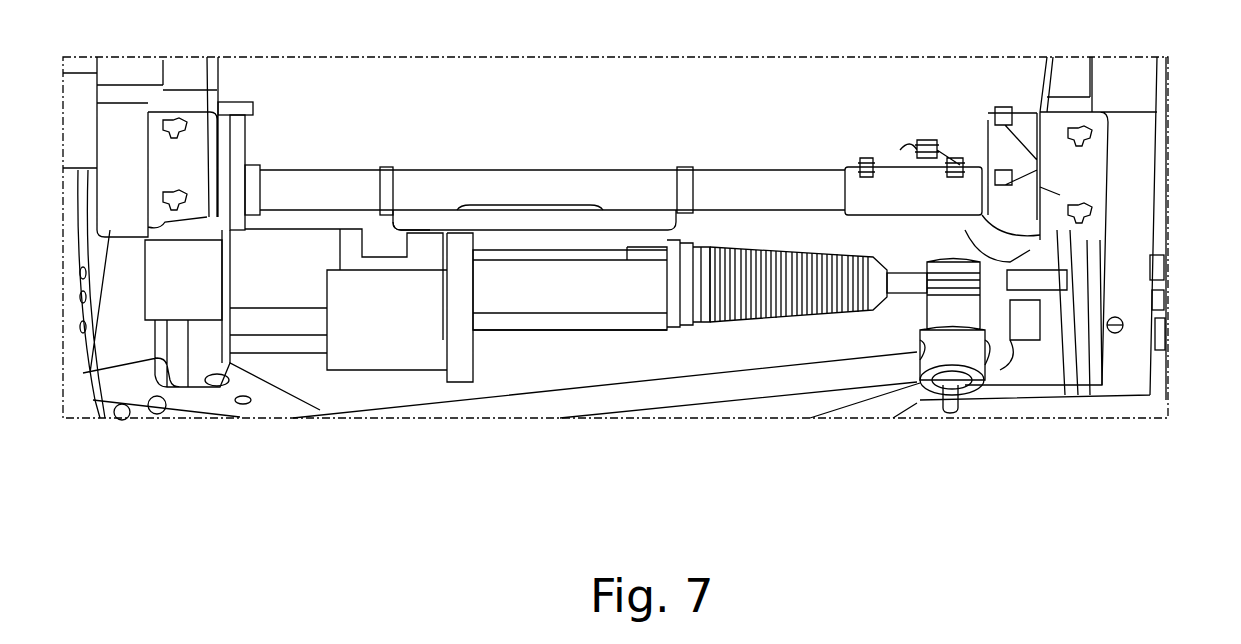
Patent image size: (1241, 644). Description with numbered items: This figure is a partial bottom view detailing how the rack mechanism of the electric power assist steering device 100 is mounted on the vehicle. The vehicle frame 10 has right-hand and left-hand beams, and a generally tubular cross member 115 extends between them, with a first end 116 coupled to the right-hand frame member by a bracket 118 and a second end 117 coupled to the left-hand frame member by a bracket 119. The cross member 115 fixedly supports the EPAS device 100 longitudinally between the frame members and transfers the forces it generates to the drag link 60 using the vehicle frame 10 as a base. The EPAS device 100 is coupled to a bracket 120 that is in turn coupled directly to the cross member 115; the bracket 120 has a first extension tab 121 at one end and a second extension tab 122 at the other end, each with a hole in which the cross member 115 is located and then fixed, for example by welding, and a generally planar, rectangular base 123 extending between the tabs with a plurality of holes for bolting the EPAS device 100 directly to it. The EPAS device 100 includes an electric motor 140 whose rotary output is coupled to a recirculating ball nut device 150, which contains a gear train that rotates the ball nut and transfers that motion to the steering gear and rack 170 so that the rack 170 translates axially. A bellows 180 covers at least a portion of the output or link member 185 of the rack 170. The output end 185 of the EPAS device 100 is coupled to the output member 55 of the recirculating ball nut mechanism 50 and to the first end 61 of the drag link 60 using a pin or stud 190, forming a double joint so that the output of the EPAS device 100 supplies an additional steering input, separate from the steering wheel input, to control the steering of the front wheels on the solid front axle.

The vehicle frame 10 is at (221, 67).
The recirculating ball nut mechanism 50 is at (912, 140).
The output or link member 55 is at (920, 316).
The drag link 60 is at (587, 383).
The first end of the drag link 61 is at (923, 400).
The electric power assist steering (EPAS) device 100 is at (498, 338).
The cross member 115 is at (475, 190).
The first end of the cross member 116 is at (260, 173).
The second end of the cross member 117 is at (1040, 187).
The bracket 118 is at (237, 157).
The bracket 119 is at (1040, 153).
The bracket 120 is at (567, 210).
The first extension tab 121 is at (680, 158).
The second extension tab 122 is at (383, 172).
The base 123 is at (415, 217).
The electric motor 140 is at (278, 357).
The recirculating ball nut device 150 is at (392, 373).
The steering gear and rack 170 is at (642, 338).
The bellows 180 is at (778, 322).
The output or link member of the rack 185 is at (927, 262).
The pin or stud 190 is at (950, 415).